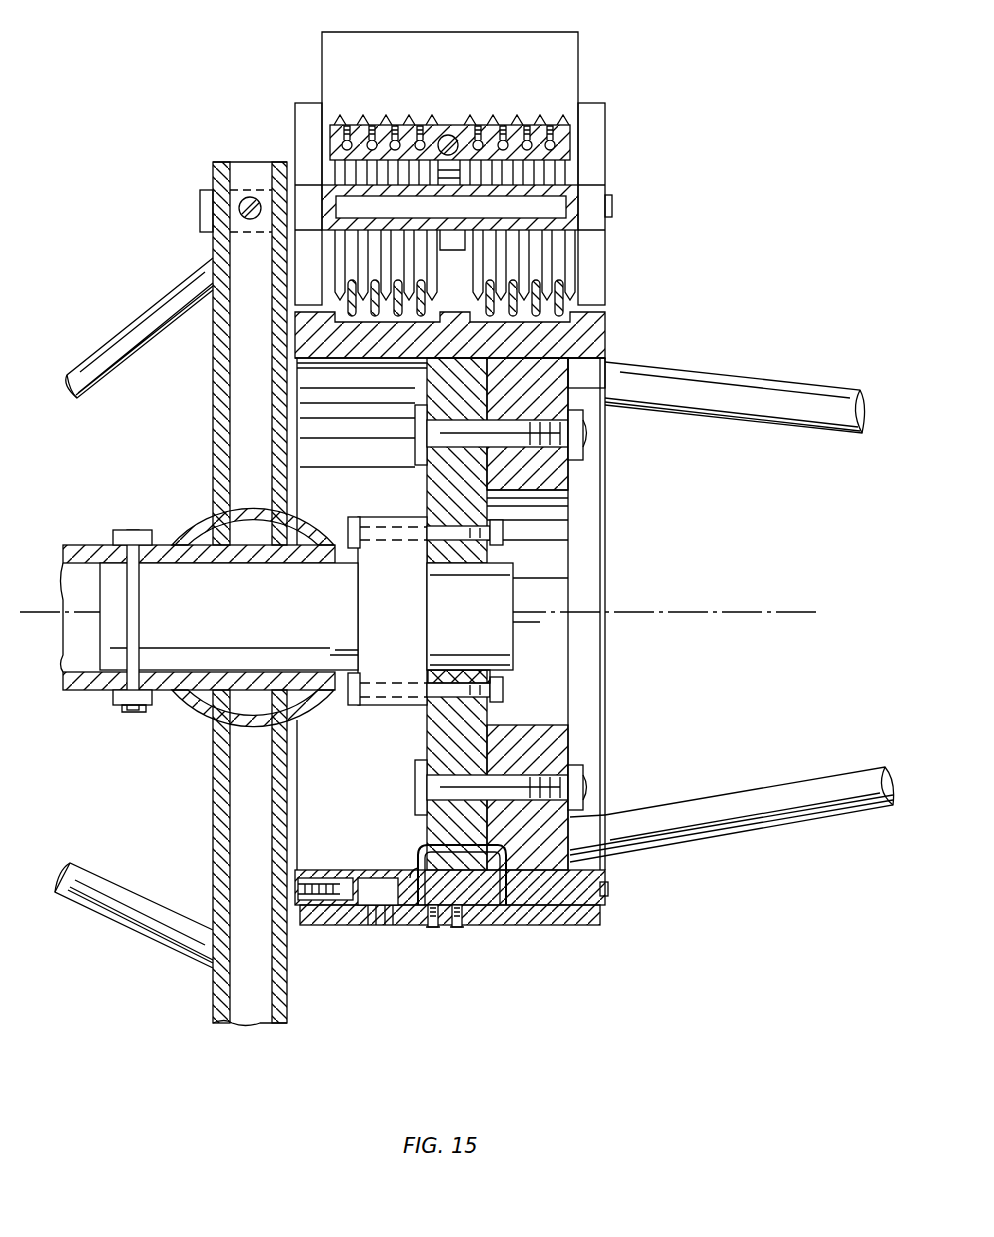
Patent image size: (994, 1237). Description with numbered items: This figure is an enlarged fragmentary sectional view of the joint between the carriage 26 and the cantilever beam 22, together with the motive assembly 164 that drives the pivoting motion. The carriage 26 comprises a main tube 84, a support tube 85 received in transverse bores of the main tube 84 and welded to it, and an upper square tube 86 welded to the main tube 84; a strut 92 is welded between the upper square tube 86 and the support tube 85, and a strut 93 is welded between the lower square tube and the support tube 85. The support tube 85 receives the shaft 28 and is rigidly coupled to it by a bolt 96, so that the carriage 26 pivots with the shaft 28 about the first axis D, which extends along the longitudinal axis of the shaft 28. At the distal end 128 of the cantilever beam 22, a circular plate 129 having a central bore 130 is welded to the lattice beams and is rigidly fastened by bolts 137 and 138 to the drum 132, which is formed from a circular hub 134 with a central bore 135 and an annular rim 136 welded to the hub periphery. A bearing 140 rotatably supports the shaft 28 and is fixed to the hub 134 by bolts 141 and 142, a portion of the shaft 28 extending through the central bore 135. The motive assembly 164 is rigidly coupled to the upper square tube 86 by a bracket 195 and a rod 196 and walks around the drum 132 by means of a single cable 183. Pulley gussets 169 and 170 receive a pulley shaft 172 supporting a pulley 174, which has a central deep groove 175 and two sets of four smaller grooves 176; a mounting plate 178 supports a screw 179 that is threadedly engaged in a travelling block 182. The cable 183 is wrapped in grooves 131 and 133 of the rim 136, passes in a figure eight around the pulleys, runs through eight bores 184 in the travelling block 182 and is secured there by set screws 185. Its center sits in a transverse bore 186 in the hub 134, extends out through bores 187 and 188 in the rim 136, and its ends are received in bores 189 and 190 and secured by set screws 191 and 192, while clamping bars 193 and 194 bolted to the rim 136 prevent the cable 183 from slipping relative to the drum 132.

The cantilever beam 22 is at (799, 376).
The carriage 26 is at (213, 472).
The shaft 28 is at (106, 577).
The main tube 84 is at (198, 520).
The support tube 85 is at (105, 537).
The upper square tube 86 is at (213, 172).
The strut 92 is at (152, 304).
The strut 93 is at (172, 862).
The bolt 96 is at (126, 530).
The distal end 128 is at (620, 366).
The circular plate 129 is at (584, 474).
The central bore 130 is at (555, 534).
The groove 131 is at (352, 360).
The drum 132 is at (620, 324).
The groove 133 is at (572, 362).
The circular hub 134 is at (417, 390).
The central bore 135 is at (476, 668).
The annular rim 136 is at (618, 343).
The bolt 137 is at (415, 433).
The bolt 138 is at (415, 788).
The bearing 140 is at (401, 510).
The bolt 141 is at (348, 528).
The bolt 142 is at (358, 705).
The motive assembly 164 is at (606, 68).
The pulley gusset 169 is at (297, 128).
The pulley gusset 170 is at (605, 114).
The pulley shaft 172 is at (613, 204).
The pulley 174 is at (583, 182).
The central deep groove 175 is at (478, 212).
The smaller grooves 176 is at (536, 272).
The mounting plate 178 is at (542, 32).
The screw 179 is at (448, 134).
The travelling block 182 is at (330, 128).
The cable 183 is at (372, 140).
The bores 184 is at (570, 148).
The set screws 185 is at (552, 135).
The transverse bore 186 is at (420, 846).
The bore 187 is at (488, 926).
The bore 188 is at (430, 928).
The bore 189 is at (595, 860).
The bore 190 is at (356, 860).
The set screw 191 is at (608, 892).
The set screw 192 is at (298, 905).
The clamping bar 193 is at (528, 925).
The clamping bar 194 is at (388, 926).
The bracket 195 is at (191, 220).
The rod 196 is at (252, 197).
The first axis D is at (768, 612).